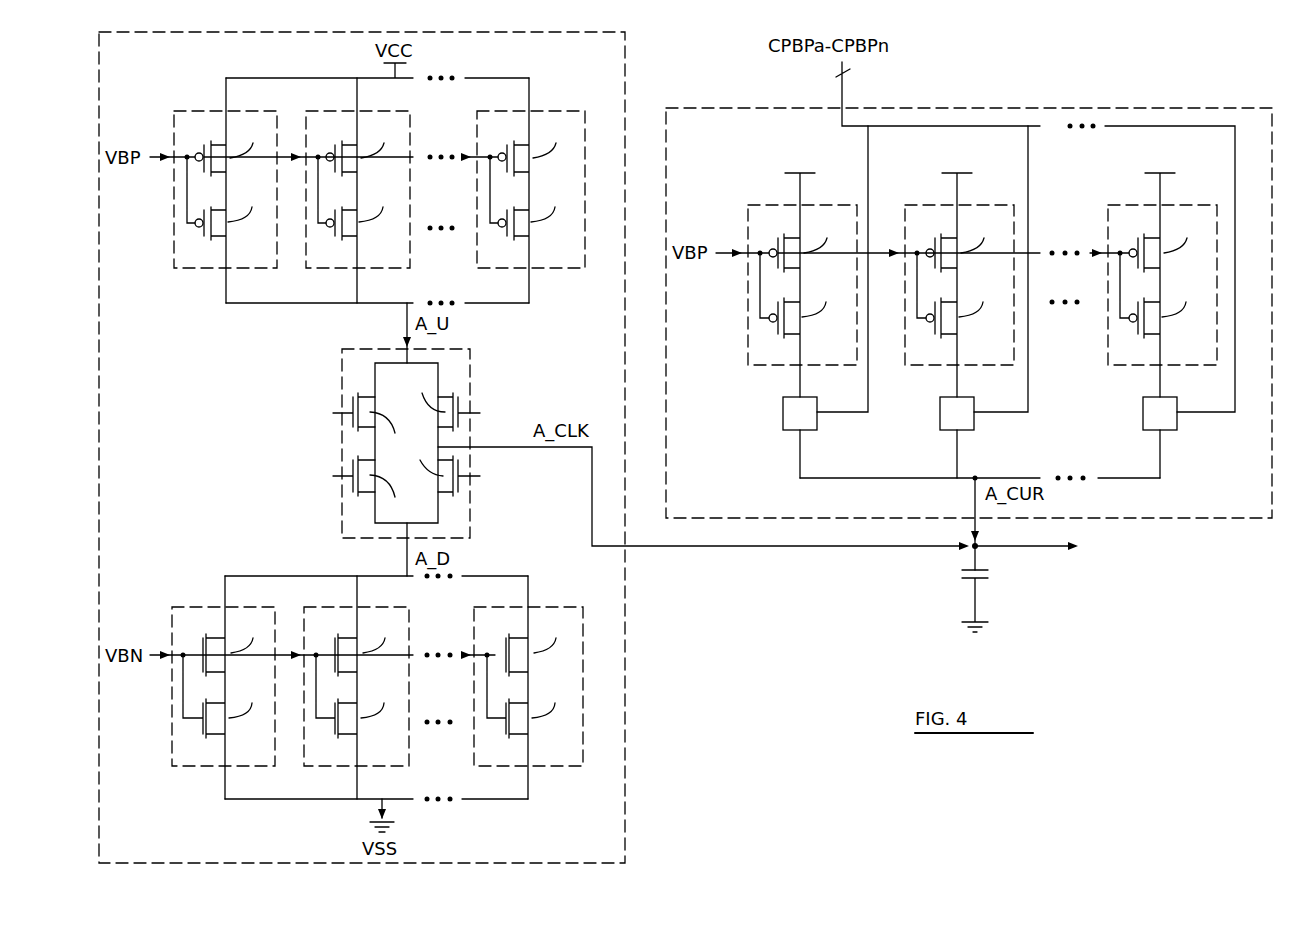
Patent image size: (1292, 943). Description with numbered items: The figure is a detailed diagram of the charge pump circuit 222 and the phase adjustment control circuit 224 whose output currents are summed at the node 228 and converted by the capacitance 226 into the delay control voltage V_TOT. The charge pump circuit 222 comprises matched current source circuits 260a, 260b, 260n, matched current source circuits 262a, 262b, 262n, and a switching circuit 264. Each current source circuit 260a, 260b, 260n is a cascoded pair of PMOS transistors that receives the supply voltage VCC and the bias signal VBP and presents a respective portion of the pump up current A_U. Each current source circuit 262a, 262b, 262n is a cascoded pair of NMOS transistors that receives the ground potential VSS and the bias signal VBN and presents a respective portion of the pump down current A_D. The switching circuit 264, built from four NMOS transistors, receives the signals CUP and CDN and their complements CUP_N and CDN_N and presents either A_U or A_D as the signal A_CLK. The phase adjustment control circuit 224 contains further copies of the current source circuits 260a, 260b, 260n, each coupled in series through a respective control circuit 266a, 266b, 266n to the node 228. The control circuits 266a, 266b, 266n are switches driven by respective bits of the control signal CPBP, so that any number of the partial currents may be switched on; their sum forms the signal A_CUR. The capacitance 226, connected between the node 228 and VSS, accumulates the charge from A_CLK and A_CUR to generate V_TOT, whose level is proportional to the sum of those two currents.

The charge pump circuit 222 is at (650, 60).
The phase adjustment control circuit 224 is at (1027, 109).
The capacitance 226 is at (960, 573).
The node 228 is at (978, 549).
The current source circuit 260a is at (214, 111).
The current source circuit 260b is at (346, 111).
The current source circuit 260n is at (517, 111).
The current source circuit 262a is at (201, 767).
The current source circuit 262b is at (338, 767).
The current source circuit 262n is at (514, 767).
The switching circuit 264 is at (472, 367).
The control circuit 266a is at (790, 397).
The control circuit 266b is at (948, 397).
The control circuit 266n is at (1151, 397).